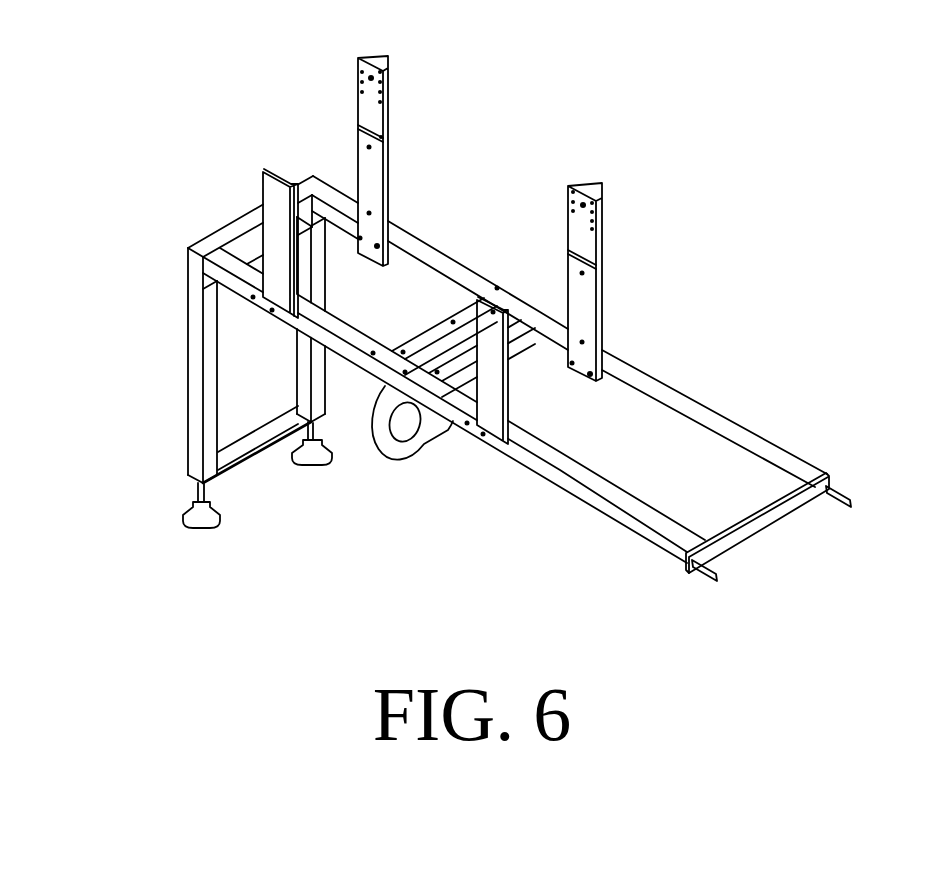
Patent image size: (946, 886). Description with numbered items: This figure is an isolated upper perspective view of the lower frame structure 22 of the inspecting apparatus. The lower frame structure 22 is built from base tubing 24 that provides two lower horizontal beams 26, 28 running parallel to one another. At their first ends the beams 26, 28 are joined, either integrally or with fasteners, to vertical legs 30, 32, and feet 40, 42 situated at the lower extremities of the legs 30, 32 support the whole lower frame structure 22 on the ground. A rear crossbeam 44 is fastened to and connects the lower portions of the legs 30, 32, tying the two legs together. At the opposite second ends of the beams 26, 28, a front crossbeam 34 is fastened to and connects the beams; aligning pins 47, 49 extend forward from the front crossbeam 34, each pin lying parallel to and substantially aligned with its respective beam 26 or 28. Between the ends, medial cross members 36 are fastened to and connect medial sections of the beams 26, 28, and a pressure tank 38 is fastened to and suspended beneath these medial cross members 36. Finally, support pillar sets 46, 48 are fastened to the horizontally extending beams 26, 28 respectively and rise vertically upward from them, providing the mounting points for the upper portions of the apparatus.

The lower frame structure 22 is at (742, 328).
The base tubing 24 is at (203, 246).
The lower horizontal beam 26 is at (581, 493).
The lower horizontal beam 28 is at (729, 430).
The vertical leg 30 is at (183, 347).
The vertical leg 32 is at (327, 291).
The front crossbeam 34 is at (794, 517).
The medial cross members 36 is at (446, 318).
The pressure tank 38 is at (411, 453).
The foot 40 is at (188, 529).
The foot 42 is at (320, 467).
The rear crossbeam 44 is at (253, 463).
The support pillar set 46 is at (261, 187).
The aligning pin 47 is at (718, 580).
The support pillar set 48 is at (357, 94).
The aligning pin 49 is at (851, 503).